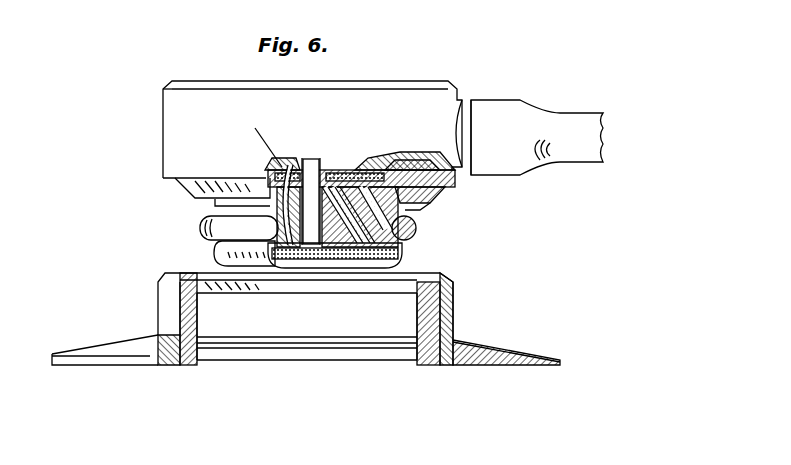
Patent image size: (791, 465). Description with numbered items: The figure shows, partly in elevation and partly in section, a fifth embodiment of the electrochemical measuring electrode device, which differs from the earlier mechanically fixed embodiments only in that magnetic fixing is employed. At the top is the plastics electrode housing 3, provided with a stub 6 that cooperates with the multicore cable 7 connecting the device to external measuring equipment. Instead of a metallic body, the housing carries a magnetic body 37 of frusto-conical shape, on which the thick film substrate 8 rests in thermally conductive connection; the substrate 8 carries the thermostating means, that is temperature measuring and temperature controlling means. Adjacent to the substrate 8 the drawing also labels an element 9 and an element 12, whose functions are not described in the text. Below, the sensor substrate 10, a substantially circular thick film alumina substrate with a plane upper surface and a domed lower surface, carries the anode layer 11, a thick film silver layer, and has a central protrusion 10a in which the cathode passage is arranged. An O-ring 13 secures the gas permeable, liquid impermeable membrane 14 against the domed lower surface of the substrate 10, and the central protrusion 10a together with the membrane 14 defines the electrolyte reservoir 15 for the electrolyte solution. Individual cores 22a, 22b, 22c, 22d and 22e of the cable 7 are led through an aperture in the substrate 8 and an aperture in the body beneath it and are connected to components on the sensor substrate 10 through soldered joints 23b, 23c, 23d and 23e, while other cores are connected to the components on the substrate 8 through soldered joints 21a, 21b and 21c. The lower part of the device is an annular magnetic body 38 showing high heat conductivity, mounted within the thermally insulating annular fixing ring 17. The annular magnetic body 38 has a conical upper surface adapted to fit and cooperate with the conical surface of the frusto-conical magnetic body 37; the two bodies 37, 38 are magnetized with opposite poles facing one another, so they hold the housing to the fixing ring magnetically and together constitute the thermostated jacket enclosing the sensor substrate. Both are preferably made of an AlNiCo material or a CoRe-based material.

The electrode housing 3 is at (163, 112).
The stub 6 is at (463, 110).
The multicore cable 7 is at (510, 100).
The thick film substrate 8 is at (443, 191).
The insulator plate 9 is at (424, 157).
The sensor substrate 10 is at (395, 257).
The central protrusion 10a is at (300, 262).
The anode layer 11 is at (323, 268).
The contact pin 12 is at (414, 219).
The O-ring 13 is at (200, 226).
The membrane 14 is at (215, 252).
The electrolyte reservoir 15 is at (293, 267).
The annular fixing ring 17 is at (105, 342).
The soldered joint 21a is at (272, 167).
The soldered joint 21b is at (316, 160).
The soldered joint 21c is at (370, 158).
The core 22a is at (267, 178).
The core 22b is at (260, 136).
The core 22c is at (303, 168).
The core 22d is at (328, 163).
The core 22e is at (417, 140).
The soldered joint 23b is at (277, 267).
The soldered joint 23c is at (310, 266).
The soldered joint 23d is at (335, 266).
The soldered joint 23e is at (365, 266).
The magnetic body 37 is at (178, 187).
The annular magnetic body 38 is at (187, 303).